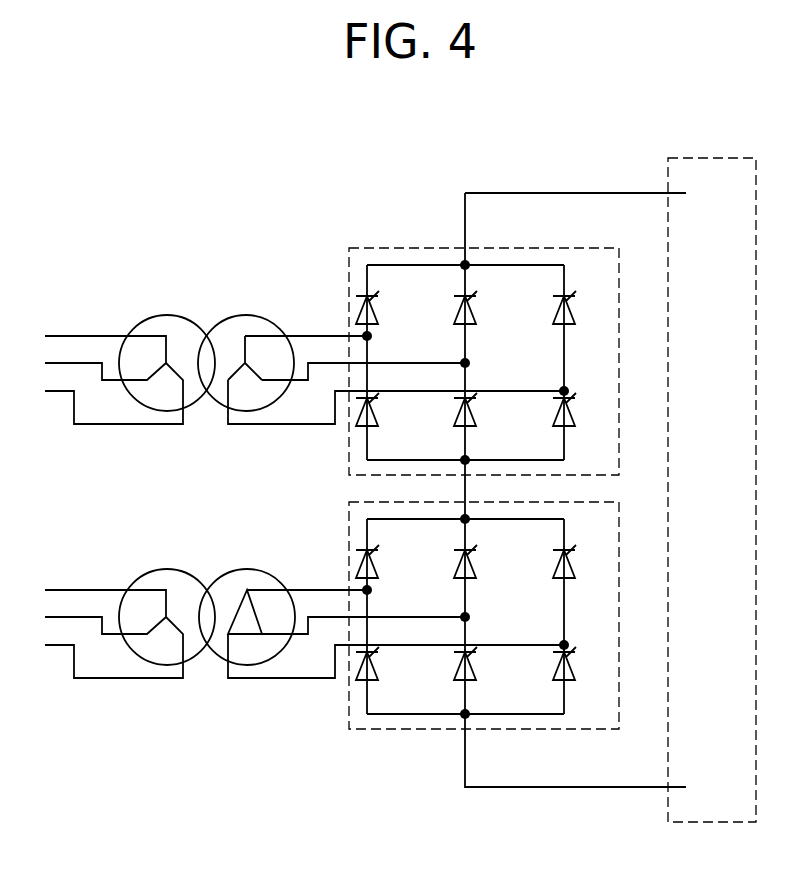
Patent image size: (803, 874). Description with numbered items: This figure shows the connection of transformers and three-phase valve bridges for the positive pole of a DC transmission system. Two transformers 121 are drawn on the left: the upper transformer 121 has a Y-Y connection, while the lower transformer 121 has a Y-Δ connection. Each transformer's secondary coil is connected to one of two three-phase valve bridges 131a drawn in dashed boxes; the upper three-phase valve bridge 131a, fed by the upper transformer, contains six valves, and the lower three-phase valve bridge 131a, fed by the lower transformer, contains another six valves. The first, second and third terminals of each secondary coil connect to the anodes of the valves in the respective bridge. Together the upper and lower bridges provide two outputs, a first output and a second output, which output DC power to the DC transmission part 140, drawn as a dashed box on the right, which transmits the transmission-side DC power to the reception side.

The transformer for the positive pole 121 is at (167, 315).
The three-phase valve bridge for the positive pole 131a is at (376, 247).
The DC transmission part 140 is at (713, 158).